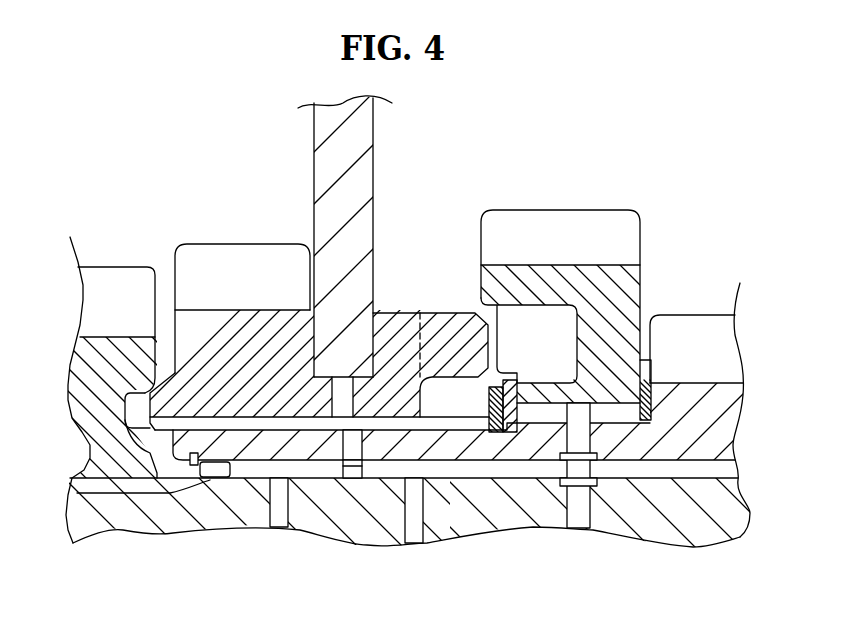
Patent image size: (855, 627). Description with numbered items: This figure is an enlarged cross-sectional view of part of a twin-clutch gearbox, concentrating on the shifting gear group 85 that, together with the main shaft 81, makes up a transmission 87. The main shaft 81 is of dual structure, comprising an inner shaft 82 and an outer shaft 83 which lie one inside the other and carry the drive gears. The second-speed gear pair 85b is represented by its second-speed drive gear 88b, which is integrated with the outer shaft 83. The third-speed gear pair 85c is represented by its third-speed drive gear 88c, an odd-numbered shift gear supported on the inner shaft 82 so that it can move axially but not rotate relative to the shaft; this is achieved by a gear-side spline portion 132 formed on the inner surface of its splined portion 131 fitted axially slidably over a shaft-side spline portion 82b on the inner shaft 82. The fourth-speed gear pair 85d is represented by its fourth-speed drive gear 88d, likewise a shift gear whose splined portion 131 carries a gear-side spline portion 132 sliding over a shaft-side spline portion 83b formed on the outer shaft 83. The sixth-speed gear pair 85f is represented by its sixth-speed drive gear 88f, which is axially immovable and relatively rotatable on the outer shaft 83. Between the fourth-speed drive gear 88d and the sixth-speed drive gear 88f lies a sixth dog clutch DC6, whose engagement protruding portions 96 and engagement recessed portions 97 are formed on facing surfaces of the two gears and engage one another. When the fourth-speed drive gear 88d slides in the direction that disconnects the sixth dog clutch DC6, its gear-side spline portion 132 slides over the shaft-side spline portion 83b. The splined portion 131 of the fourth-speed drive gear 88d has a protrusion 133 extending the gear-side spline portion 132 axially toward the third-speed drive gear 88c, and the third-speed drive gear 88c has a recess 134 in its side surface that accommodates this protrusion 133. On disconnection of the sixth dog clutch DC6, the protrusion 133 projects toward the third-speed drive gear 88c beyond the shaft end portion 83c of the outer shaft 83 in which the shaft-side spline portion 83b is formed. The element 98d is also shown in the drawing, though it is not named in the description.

The shifting gear group 85 is at (418, 320).
The transmission 87 is at (659, 172).
The third-speed gear pair 85c is at (95, 258).
The third-speed drive gear 88c is at (120, 290).
The splined portion 131 is at (242, 407).
The protrusion 133 is at (80, 378).
The recess 134 is at (123, 403).
The fourth-speed drive gear 88d is at (242, 277).
The fourth-speed gear pair 85d is at (274, 235).
The rod 98d is at (347, 187).
The engagement protruding portions 96 is at (450, 342).
The sixth dog clutch DC6 is at (455, 290).
The sixth-speed drive gear 88f is at (537, 240).
The sixth-speed gear pair 85f is at (587, 200).
The second-speed drive gear 88b is at (694, 350).
The second-speed gear pair 85b is at (720, 300).
The main shaft 81 is at (443, 465).
The outer shaft 83 is at (712, 433).
The inner shaft 82 is at (727, 500).
The shaft-side spline portion 82b is at (73, 456).
The gear-side spline portion 132 is at (121, 440).
The shaft end portion 83c is at (181, 453).
The shaft-side spline portion 83b is at (300, 425).
The engagement recessed portions 97 is at (558, 345).